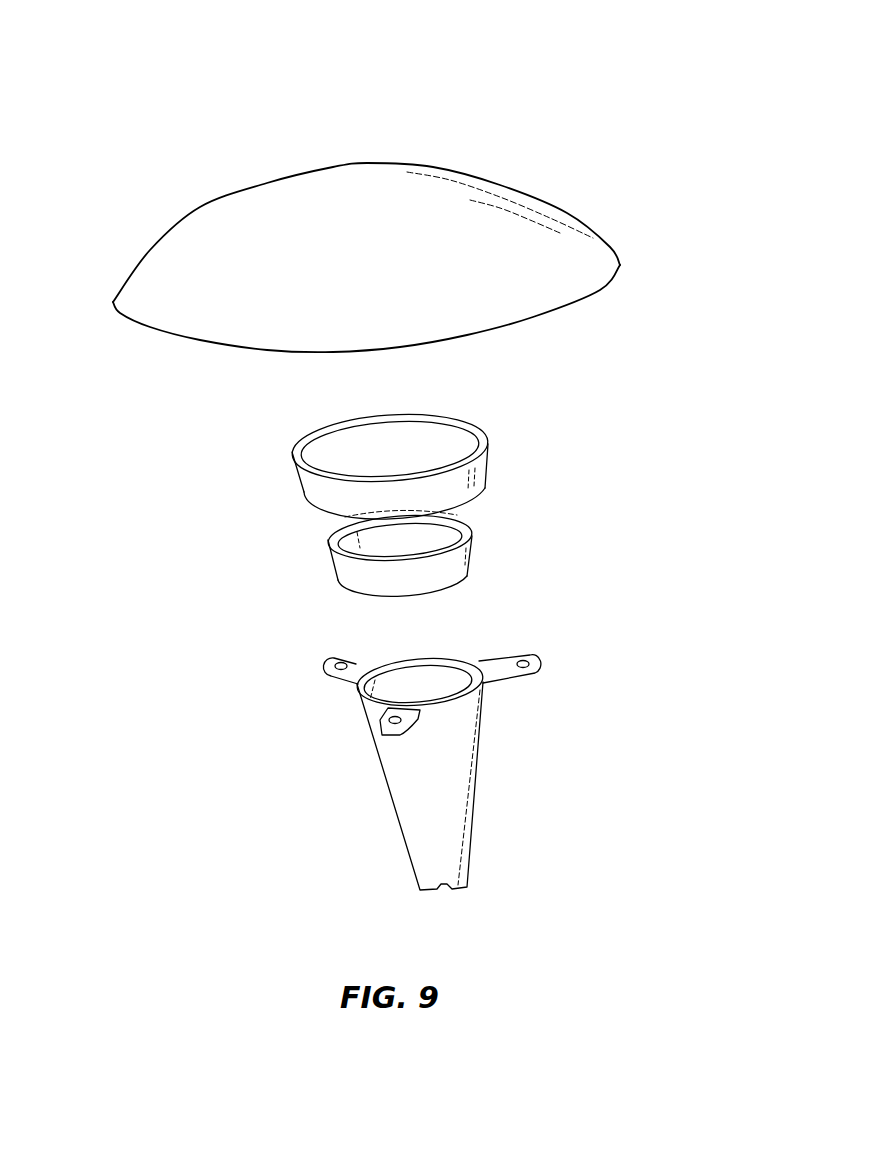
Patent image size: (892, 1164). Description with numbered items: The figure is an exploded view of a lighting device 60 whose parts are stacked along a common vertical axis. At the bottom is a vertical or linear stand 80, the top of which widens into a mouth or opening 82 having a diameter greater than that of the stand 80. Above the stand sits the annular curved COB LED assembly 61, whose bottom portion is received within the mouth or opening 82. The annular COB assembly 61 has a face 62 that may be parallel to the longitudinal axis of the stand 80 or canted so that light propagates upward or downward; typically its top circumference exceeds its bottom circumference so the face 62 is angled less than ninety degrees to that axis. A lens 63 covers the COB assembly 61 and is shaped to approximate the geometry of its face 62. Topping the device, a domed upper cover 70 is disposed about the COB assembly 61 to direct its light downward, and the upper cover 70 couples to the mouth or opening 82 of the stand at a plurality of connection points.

The lighting device 60 is at (578, 113).
The upper cover 70 is at (173, 257).
The lens 63 is at (470, 482).
The annular curved COB LED assembly 61 is at (473, 553).
The face 62 is at (350, 578).
The mouth or opening 82 is at (435, 678).
The linear stand 80 is at (442, 848).